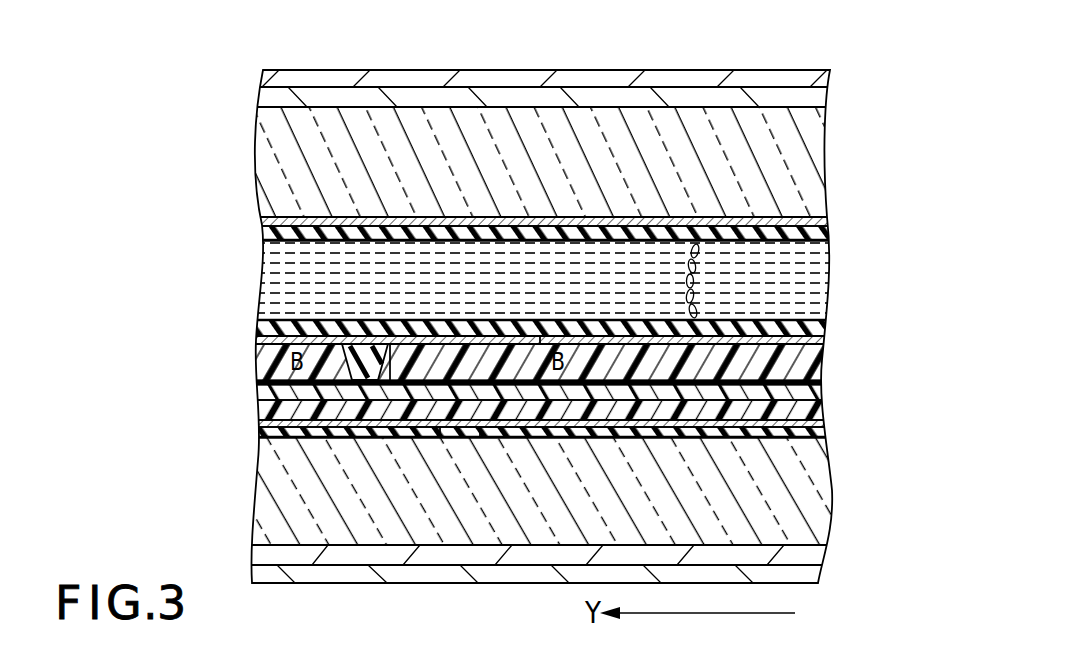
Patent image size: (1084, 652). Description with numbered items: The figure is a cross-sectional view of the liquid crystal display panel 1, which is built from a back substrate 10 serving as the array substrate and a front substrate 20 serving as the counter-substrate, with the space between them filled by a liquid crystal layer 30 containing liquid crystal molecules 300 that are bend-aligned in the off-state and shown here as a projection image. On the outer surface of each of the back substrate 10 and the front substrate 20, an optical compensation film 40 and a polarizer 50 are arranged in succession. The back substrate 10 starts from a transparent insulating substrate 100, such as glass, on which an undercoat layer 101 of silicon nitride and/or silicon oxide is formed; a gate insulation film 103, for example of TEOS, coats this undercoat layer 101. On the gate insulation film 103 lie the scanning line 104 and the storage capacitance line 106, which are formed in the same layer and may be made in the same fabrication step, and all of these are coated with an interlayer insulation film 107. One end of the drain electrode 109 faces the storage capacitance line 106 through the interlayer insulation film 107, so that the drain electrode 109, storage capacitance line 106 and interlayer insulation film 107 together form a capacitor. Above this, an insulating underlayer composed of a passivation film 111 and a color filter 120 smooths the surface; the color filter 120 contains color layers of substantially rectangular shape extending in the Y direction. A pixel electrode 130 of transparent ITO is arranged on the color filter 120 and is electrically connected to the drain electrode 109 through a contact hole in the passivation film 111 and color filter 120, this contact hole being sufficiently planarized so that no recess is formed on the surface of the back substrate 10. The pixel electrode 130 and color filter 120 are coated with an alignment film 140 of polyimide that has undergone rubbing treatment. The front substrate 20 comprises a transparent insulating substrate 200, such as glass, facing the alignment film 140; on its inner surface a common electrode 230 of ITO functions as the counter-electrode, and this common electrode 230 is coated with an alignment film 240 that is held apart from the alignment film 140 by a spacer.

The liquid crystal display panel 1 is at (806, 55).
The back substrate 10 is at (843, 325).
The front substrate 20 is at (843, 114).
The liquid crystal layer 30 is at (818, 278).
The optical compensation film 40 is at (823, 98).
The polarizer 50 is at (826, 80).
The transparent insulating substrate 100 is at (263, 513).
The undercoat layer 101 is at (260, 433).
The gate insulation film 103 is at (445, 442).
The scanning line 104 is at (497, 440).
The storage capacitance line 106 is at (333, 440).
The interlayer insulation film 107 is at (260, 397).
The drain electrode 109 is at (402, 382).
The passivation film 111 is at (258, 383).
The color filter 120 is at (750, 352).
The pixel electrode 130 is at (535, 338).
The alignment film 140 is at (602, 338).
The transparent insulating substrate 200 is at (258, 122).
The common electrode 230 is at (458, 388).
The alignment film 240 is at (318, 332).
The liquid crystal molecules 300 is at (693, 246).